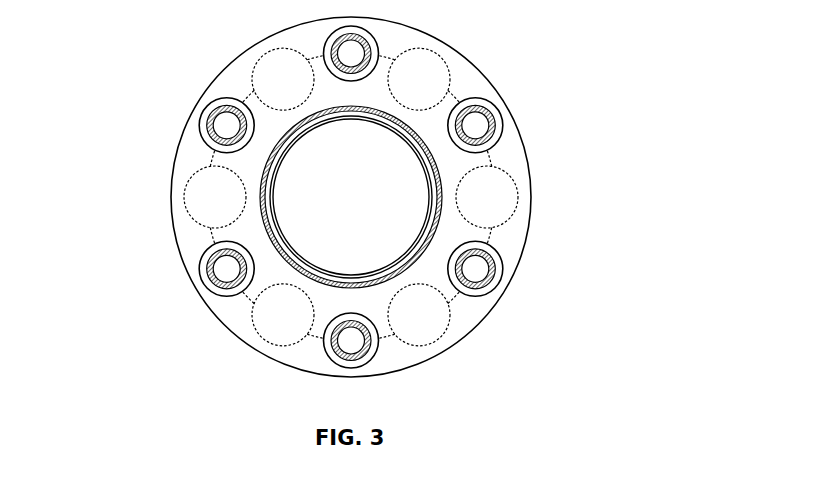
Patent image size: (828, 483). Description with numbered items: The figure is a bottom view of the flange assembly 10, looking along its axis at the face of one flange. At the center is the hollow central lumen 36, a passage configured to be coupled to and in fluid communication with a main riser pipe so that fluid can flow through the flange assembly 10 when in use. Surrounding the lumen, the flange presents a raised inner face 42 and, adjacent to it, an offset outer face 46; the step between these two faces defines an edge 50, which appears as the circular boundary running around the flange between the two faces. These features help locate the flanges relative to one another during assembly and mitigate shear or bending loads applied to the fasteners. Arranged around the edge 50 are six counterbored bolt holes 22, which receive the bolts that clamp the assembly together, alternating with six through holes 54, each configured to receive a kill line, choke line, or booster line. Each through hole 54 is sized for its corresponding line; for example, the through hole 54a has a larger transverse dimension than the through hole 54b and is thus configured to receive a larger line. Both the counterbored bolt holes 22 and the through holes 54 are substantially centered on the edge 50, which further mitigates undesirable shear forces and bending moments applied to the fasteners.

The flange assembly 10 is at (190, 53).
The counterbored bolt holes 22 is at (505, 277).
The hollow central lumen 36 is at (377, 218).
The raised inner face 42 is at (468, 163).
The offset outer face 46 is at (502, 105).
The edge 50 is at (447, 88).
The through holes 54 is at (500, 200).
The through hole 54a is at (192, 198).
The through hole 54b is at (282, 318).